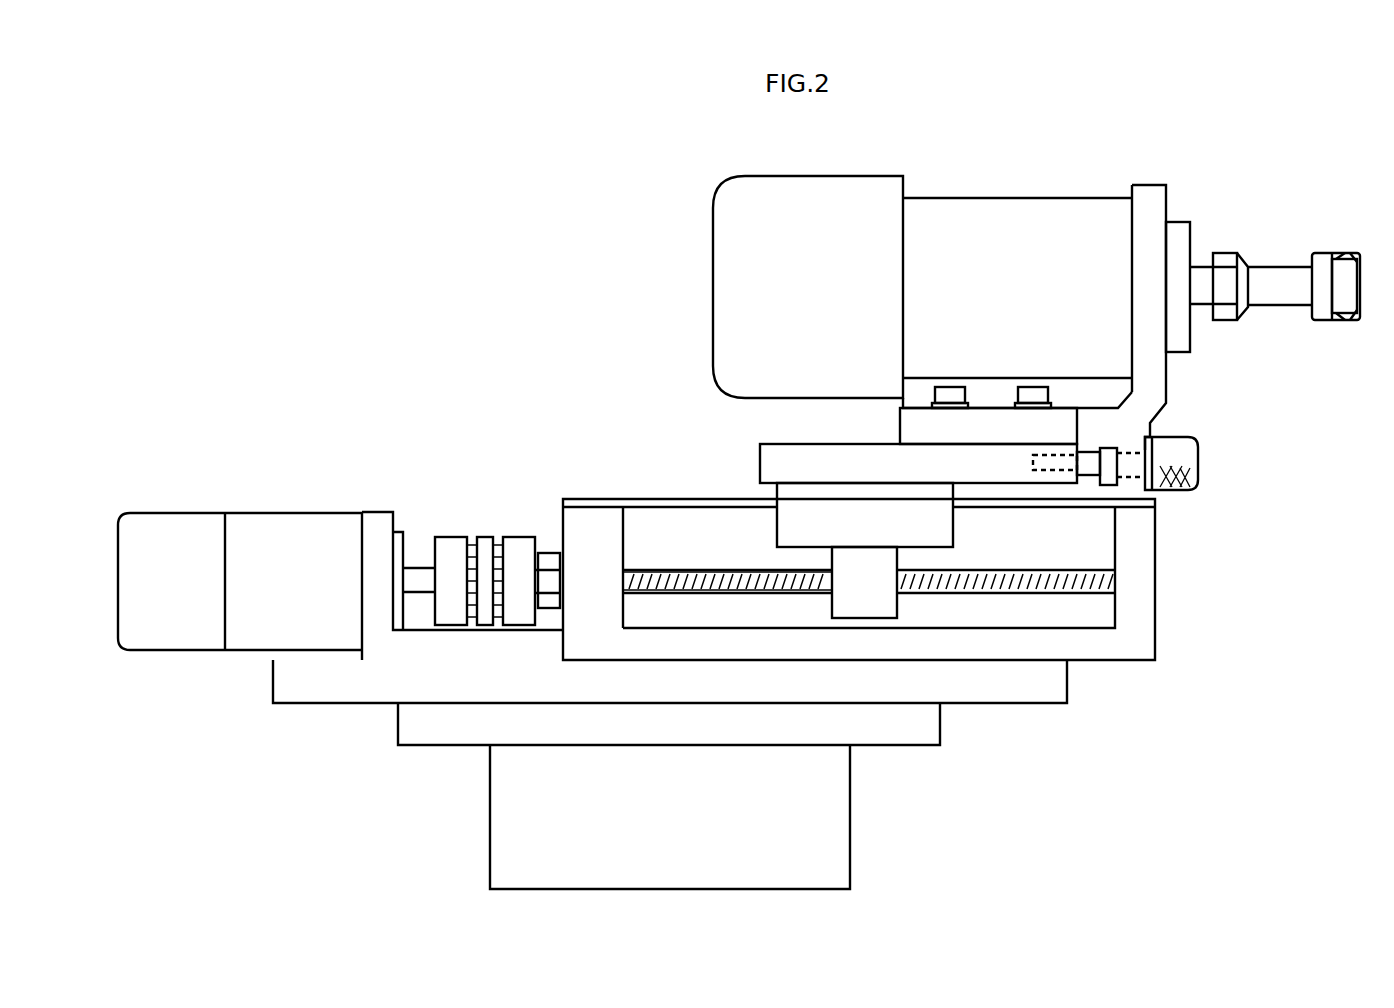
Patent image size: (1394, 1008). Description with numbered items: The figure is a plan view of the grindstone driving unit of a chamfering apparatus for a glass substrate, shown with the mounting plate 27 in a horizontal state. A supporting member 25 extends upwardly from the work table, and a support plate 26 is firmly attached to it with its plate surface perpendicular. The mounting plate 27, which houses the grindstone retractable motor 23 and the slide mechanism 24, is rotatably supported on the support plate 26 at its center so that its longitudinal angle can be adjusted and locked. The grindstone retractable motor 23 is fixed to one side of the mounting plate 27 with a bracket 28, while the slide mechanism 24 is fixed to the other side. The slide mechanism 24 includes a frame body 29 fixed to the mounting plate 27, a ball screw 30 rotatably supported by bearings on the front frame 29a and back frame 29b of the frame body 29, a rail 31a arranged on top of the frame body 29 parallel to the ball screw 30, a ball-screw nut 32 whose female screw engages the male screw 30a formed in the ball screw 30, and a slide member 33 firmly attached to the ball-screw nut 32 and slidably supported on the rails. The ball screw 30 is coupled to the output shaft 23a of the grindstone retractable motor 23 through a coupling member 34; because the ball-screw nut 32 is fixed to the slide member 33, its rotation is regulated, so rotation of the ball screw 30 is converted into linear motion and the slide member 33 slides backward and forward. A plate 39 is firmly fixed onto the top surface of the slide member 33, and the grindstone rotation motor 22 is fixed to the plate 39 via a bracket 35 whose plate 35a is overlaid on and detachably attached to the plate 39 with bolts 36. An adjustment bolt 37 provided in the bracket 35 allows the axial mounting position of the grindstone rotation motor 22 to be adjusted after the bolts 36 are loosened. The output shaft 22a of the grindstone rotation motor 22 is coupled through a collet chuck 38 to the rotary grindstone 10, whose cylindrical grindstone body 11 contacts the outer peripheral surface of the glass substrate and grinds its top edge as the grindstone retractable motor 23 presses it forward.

The rotary grindstone 10 is at (1323, 246).
The cylindrical grindstone body 11 is at (1356, 252).
The grindstone rotation motor 22 is at (1006, 198).
The output shaft 22a is at (1197, 266).
The grindstone retractable motor 23 is at (288, 512).
The output shaft 23a is at (420, 567).
The slide mechanism 24 is at (1183, 698).
The supporting member 25 is at (851, 846).
The support plate 26 is at (941, 723).
The mounting plate 27 is at (1068, 683).
The bracket 28 is at (372, 511).
The frame body 29 is at (1156, 637).
The front frame 29a is at (1156, 600).
The back frame 29b is at (560, 513).
The ball screw 30 is at (1093, 572).
The male screw 30a is at (713, 568).
The rail 31a is at (645, 497).
The ball-screw nut 32 is at (898, 607).
The slide member 33 is at (954, 526).
The coupling member 34 is at (446, 536).
The bracket 35 is at (1167, 400).
The plate 35a is at (898, 409).
The bolts 36 is at (1050, 394).
The adjustment bolt 37 is at (1199, 462).
The collet chuck 38 is at (1228, 321).
The plate 39 is at (795, 443).